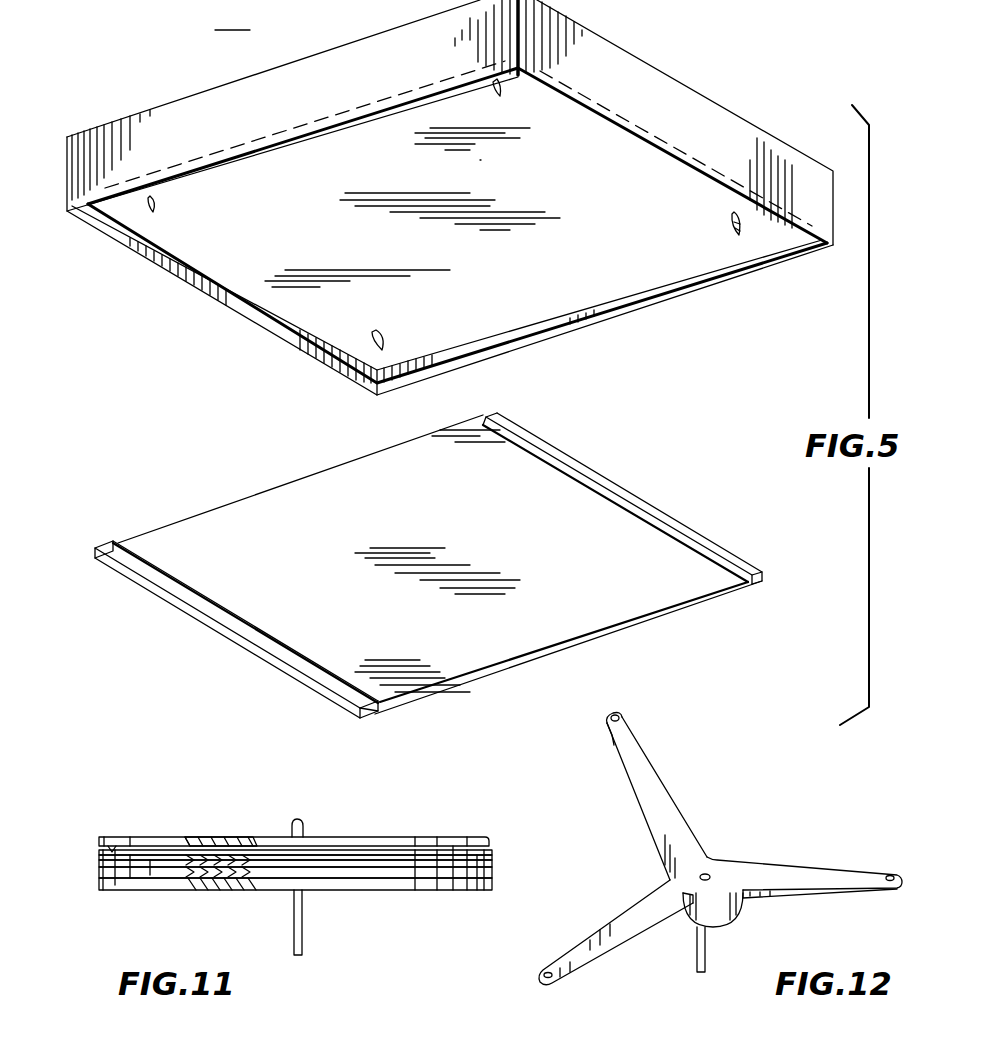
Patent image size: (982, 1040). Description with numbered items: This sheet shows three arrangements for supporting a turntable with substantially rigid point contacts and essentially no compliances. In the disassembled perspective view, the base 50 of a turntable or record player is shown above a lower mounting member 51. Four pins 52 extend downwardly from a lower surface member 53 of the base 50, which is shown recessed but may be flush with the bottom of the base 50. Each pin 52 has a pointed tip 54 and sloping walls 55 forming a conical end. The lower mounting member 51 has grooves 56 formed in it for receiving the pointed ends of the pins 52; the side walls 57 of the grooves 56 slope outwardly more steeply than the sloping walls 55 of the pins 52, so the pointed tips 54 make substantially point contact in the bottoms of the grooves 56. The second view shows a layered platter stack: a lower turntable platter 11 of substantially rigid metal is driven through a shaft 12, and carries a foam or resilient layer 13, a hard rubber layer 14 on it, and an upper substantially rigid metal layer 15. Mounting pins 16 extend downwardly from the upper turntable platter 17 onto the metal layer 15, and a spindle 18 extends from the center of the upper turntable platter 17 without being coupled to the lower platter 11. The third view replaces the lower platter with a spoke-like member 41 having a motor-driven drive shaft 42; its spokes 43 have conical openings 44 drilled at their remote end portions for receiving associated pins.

In FIG. 5, the base 50 is at (776, 160).
In FIG. 5, the lower mounting member 51 is at (692, 488).
In FIG. 5, the pins 52 is at (497, 95).
In FIG. 5, the lower surface member 53 is at (472, 250).
In FIG. 5, the pointed tip 54 is at (738, 232).
In FIG. 5, the sloping walls 55 is at (735, 228).
In FIG. 5, the grooves 56 is at (633, 514).
In FIG. 5, the side walls 57 is at (382, 714).
In FIG. 11, the lower turntable platter 11 is at (484, 883).
In FIG. 11, the shaft 12 is at (302, 927).
In FIG. 11, the resilient layer 13 is at (493, 873).
In FIG. 11, the hard rubber layer 14 is at (493, 866).
In FIG. 11, the upper metal layer 15 is at (493, 858).
In FIG. 11, the mounting pins 16 is at (490, 853).
In FIG. 11, the upper turntable platter 17 is at (450, 840).
In FIG. 11, the spindle 18 is at (304, 830).
In FIG. 12, the spoke-like member 41 is at (707, 874).
In FIG. 12, the drive shaft 42 is at (707, 960).
In FIG. 12, the spokes 43 is at (643, 760).
In FIG. 12, the conical openings 44 is at (620, 717).